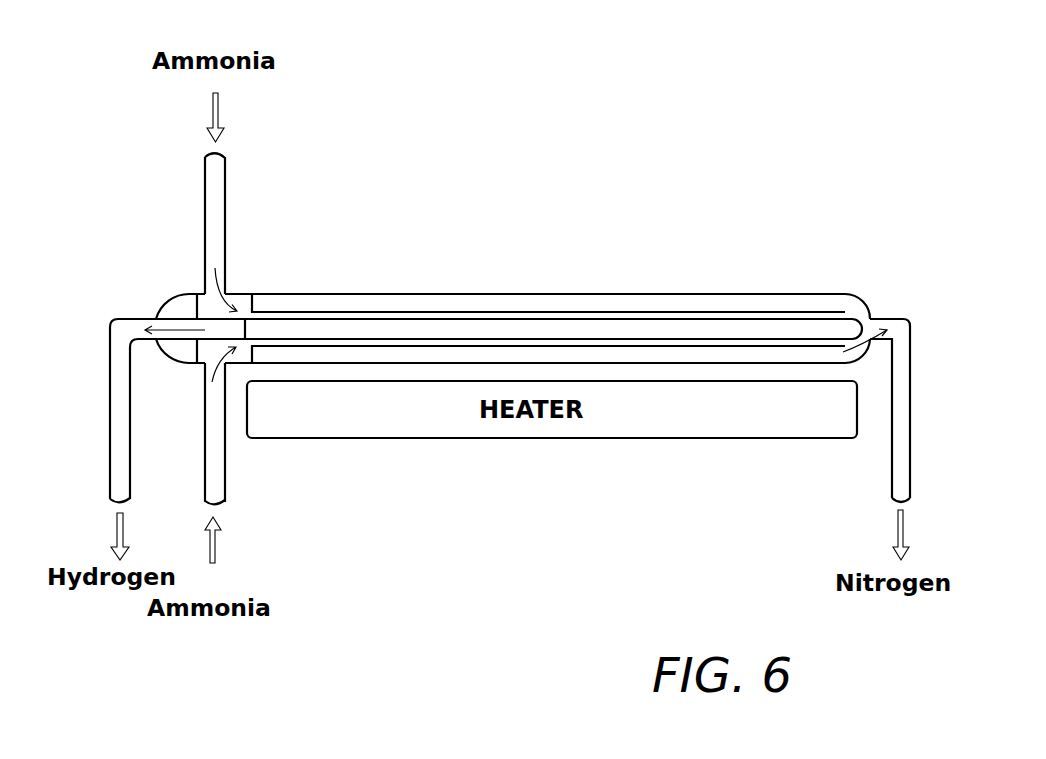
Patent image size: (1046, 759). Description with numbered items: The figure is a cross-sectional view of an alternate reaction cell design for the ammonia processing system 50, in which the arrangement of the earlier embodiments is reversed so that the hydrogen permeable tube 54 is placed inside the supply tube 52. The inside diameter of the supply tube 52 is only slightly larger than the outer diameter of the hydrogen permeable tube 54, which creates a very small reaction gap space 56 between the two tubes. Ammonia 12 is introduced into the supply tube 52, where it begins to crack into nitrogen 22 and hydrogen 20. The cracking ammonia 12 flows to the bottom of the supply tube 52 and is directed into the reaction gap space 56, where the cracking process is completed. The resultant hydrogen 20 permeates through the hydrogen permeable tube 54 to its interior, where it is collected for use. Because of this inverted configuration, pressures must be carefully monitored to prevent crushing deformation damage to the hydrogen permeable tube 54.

The system 50 is at (630, 276).
The supply tube 52 is at (410, 346).
The hydrogen permeable tube 54 is at (333, 330).
The reaction gap space 56 is at (618, 344).
The ammonia 12 is at (223, 590).
The hydrogen 20 is at (82, 555).
The nitrogen 22 is at (933, 570).